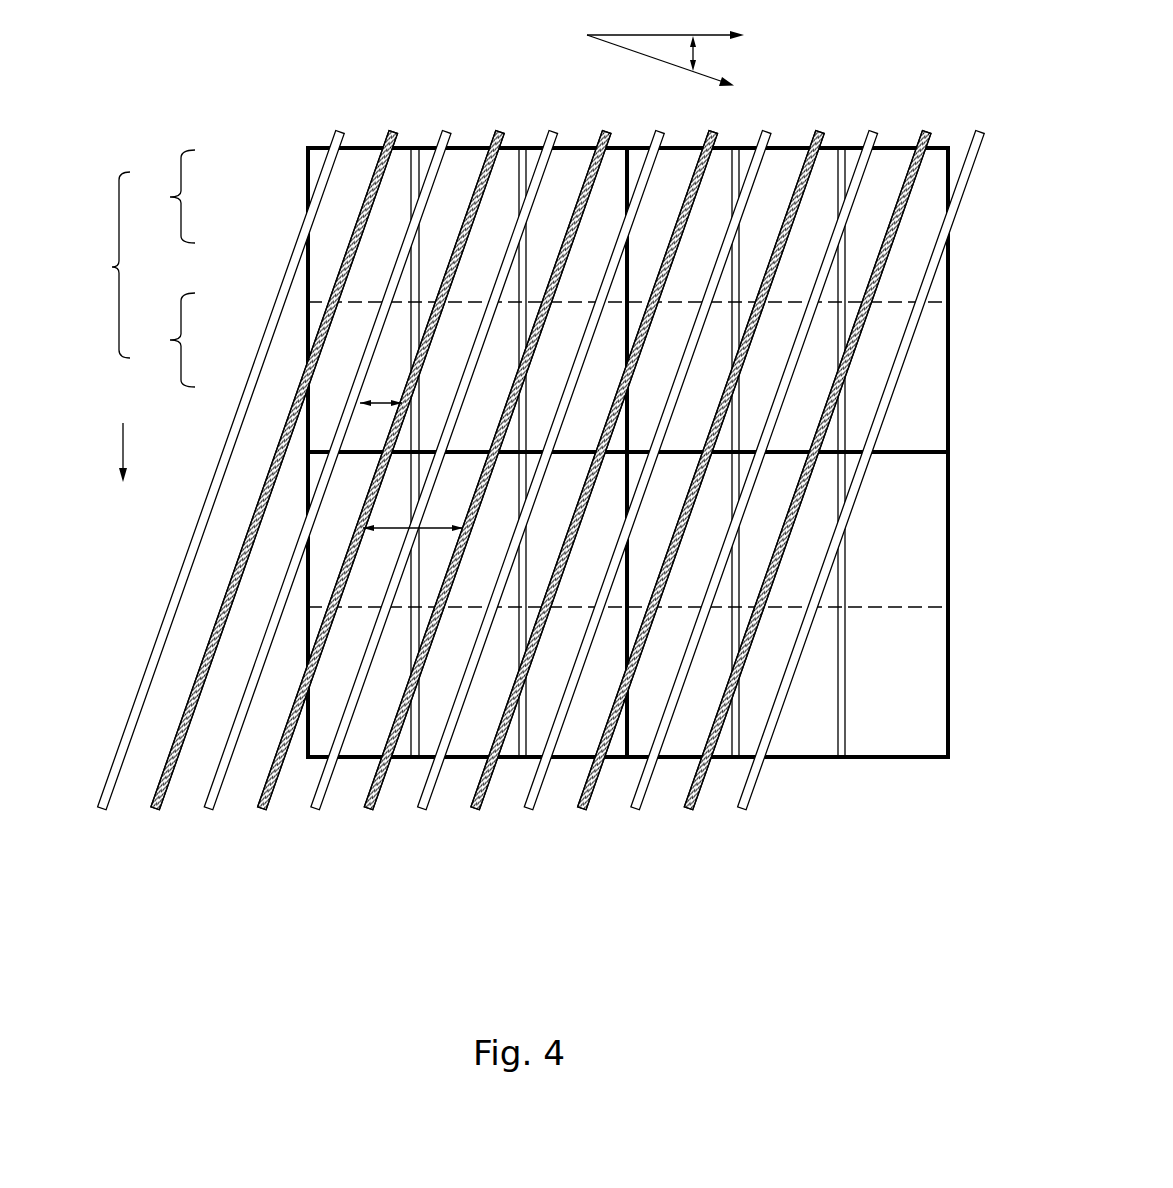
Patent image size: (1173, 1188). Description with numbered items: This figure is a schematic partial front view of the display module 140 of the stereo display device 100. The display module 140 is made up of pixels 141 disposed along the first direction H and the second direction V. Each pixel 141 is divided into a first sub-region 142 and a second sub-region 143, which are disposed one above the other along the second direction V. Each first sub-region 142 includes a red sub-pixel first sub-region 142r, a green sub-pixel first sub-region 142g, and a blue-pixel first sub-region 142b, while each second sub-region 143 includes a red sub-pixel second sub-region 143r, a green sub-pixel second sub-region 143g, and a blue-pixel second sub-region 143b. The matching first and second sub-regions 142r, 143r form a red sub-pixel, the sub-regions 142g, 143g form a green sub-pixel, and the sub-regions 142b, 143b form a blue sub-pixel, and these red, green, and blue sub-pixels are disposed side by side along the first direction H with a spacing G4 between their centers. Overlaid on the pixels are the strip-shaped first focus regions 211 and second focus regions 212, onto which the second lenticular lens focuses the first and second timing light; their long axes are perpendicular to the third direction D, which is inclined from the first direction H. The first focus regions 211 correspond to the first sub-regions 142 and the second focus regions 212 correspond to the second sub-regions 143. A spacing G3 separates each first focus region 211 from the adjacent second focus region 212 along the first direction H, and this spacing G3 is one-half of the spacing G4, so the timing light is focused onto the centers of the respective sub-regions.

The stereo display device 100 is at (236, 20).
The display module 140 is at (366, 147).
The pixels 141 is at (97, 265).
The first sub-region 142 is at (161, 196).
The blue-pixel first sub-region 142b is at (372, 171).
The green sub-pixel first sub-region 142g is at (318, 196).
The red sub-pixel first sub-region 142r is at (260, 224).
The second sub-region 143 is at (161, 340).
The blue-pixel second sub-region 143b is at (372, 315).
The green sub-pixel second sub-region 143g is at (318, 340).
The red sub-pixel second sub-region 143r is at (260, 368).
The first focus regions 211 is at (503, 147).
The second focus regions 212 is at (450, 147).
The spacing between first focus region and adjacent second focus region G3 is at (380, 419).
The spacing between centers of sub-pixels G4 is at (413, 544).
The first direction H is at (676, 38).
The second direction V is at (123, 468).
The third direction D is at (672, 71).